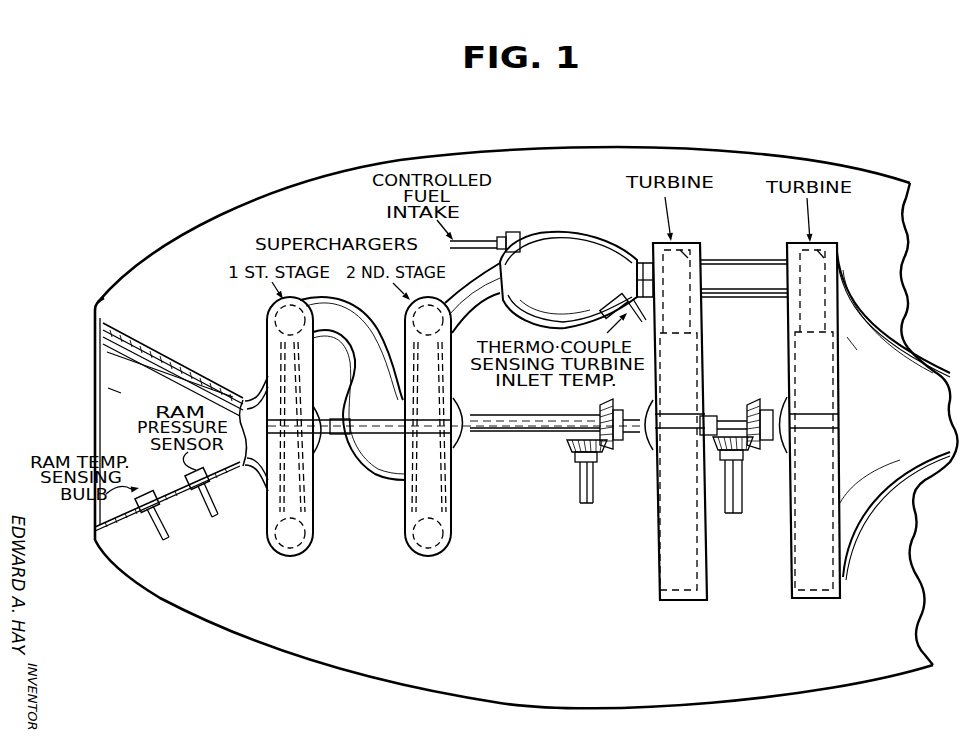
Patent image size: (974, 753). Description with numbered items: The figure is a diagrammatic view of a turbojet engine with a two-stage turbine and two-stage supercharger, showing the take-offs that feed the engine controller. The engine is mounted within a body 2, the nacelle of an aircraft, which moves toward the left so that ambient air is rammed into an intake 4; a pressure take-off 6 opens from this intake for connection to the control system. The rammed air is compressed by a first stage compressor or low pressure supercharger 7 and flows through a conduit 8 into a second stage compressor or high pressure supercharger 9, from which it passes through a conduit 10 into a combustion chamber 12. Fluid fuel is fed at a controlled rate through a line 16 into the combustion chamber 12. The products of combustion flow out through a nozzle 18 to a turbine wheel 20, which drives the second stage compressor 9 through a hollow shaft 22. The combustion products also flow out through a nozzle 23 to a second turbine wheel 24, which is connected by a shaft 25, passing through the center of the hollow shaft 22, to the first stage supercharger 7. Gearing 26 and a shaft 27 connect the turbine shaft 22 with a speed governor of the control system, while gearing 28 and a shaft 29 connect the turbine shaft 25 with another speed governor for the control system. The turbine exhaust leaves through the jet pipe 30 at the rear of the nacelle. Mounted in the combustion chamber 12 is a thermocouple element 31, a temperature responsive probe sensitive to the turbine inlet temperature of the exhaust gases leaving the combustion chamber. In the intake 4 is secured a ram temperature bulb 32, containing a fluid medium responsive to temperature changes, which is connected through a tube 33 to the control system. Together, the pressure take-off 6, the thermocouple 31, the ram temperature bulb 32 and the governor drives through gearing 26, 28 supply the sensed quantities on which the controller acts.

The body 2 is at (183, 234).
The intake 4 is at (110, 418).
The pressure take-off 6 is at (209, 496).
The first stage compressor or low pressure supercharger 7 is at (270, 357).
The conduit 8 is at (367, 329).
The second stage compressor or high pressure supercharger 9 is at (423, 503).
The conduit 10 is at (468, 303).
The combustion chamber 12 is at (571, 232).
The line 16 is at (482, 240).
The nozzle 18 is at (647, 263).
The turbine wheel 20 is at (697, 246).
The hollow shaft 22 is at (520, 418).
The nozzle 23 is at (728, 266).
The second turbine wheel 24 is at (830, 252).
The shaft 25 is at (334, 436).
The gearing 26 is at (611, 460).
The shaft 27 is at (580, 497).
The gearing 28 is at (757, 457).
The shaft 29 is at (734, 502).
The jet pipe 30 is at (906, 352).
The thermocouple element 31 is at (608, 305).
The ram temperature bulb 32 is at (145, 510).
The tube 33 is at (166, 524).